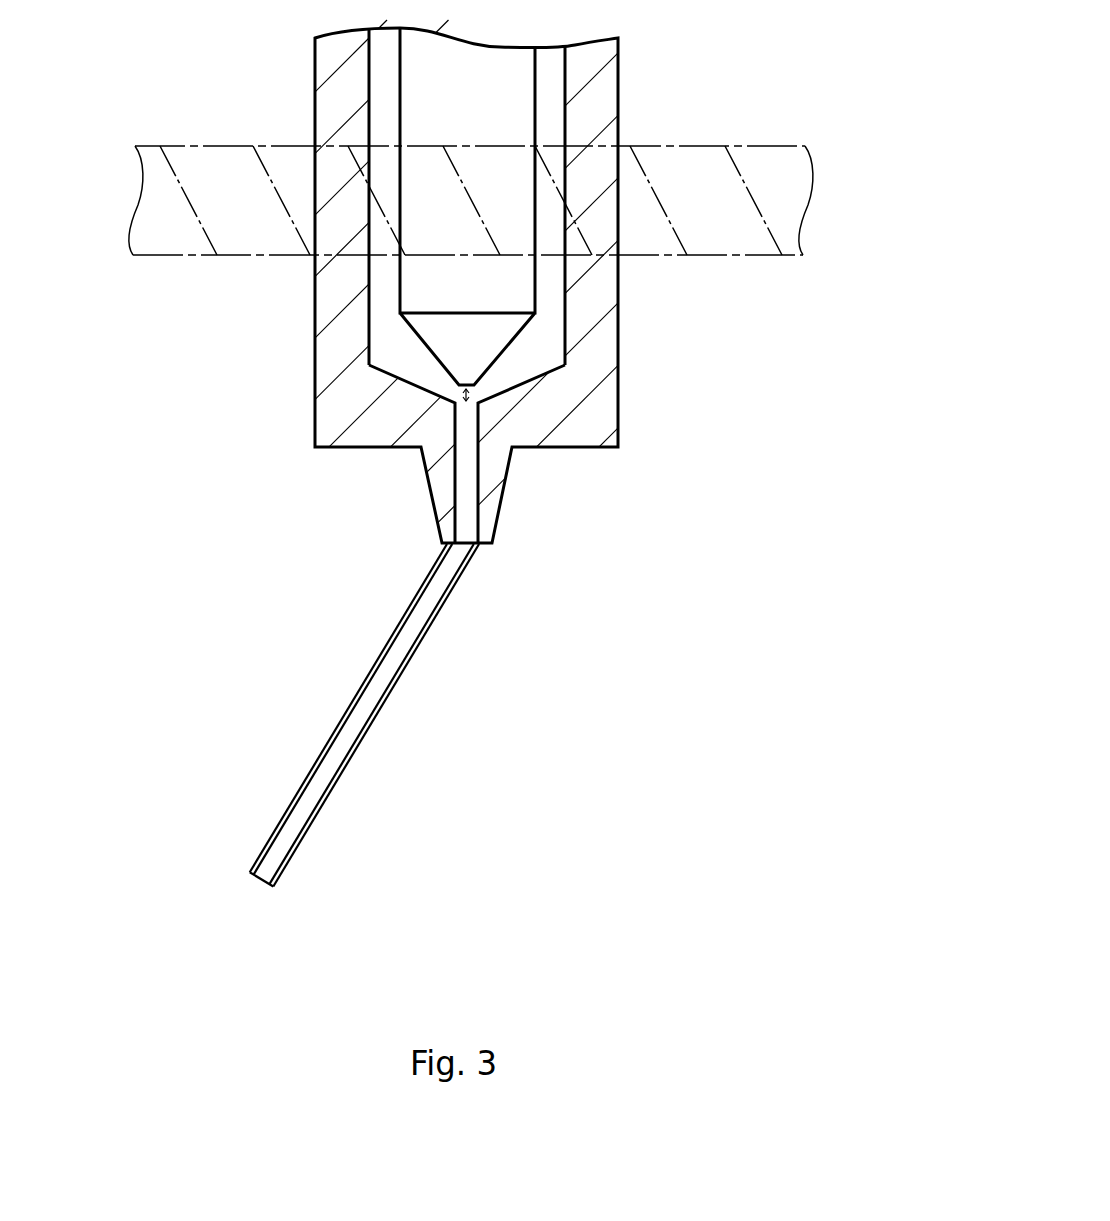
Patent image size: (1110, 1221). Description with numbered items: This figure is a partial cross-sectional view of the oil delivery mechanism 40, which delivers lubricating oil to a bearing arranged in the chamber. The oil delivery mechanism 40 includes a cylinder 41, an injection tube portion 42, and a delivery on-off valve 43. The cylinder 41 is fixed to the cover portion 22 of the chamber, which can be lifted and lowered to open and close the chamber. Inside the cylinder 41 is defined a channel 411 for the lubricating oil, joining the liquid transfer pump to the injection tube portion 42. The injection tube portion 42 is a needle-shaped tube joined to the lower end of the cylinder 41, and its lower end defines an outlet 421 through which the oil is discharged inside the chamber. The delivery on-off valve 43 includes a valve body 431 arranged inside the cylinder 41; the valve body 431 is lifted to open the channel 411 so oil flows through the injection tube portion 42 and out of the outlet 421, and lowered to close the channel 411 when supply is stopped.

The cover portion 22 is at (699, 146).
The oil delivery mechanism 40 is at (544, 500).
The cylinder 41 is at (599, 297).
The channel 411 is at (381, 277).
The valve body 431 is at (418, 88).
The delivery on-off valve 43 is at (435, 372).
The injection tube portion 42 is at (393, 690).
The outlet 421 is at (257, 887).